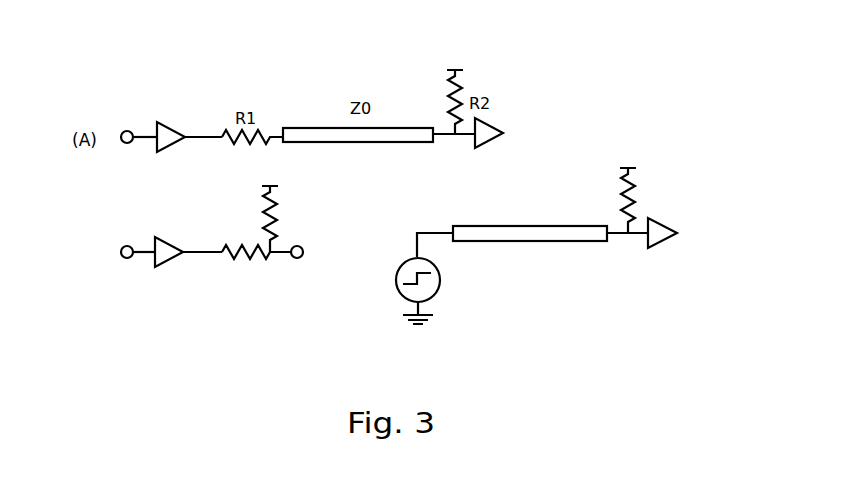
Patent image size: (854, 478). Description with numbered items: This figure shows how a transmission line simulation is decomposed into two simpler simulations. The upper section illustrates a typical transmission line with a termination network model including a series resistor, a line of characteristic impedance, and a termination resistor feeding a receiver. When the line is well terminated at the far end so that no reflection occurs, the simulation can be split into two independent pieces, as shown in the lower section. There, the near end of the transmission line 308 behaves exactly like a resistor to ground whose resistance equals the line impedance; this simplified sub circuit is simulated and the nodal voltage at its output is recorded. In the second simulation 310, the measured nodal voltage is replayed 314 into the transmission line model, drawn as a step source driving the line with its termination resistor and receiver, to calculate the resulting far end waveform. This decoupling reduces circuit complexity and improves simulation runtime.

The near end of the transmission line 308 is at (227, 283).
The second simulation 310 is at (545, 282).
The replayed nodal voltage 314 is at (397, 290).